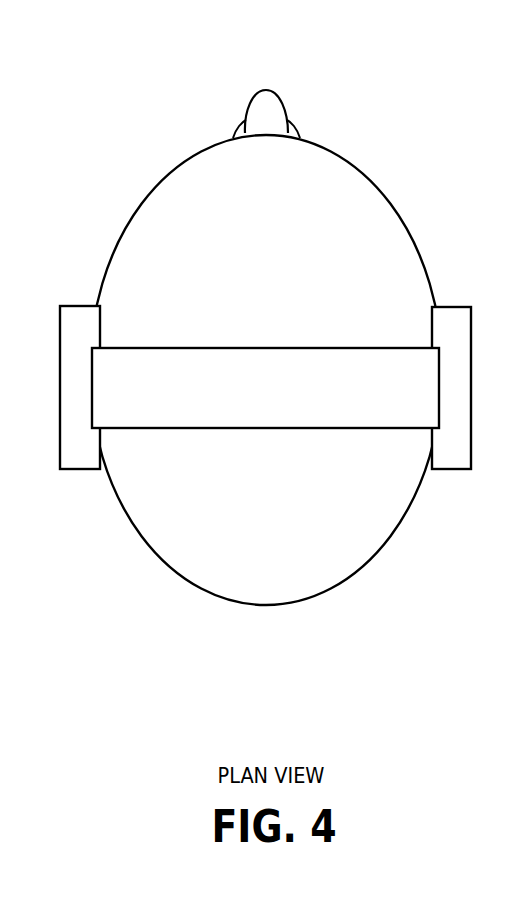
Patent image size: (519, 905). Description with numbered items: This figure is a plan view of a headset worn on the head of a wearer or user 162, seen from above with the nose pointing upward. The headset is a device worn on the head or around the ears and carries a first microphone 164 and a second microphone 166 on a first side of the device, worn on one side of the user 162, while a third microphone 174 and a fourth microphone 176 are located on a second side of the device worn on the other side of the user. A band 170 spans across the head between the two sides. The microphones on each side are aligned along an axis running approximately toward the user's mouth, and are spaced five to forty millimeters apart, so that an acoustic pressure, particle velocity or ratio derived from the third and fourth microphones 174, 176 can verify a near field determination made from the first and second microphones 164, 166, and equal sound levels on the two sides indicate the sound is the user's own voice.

The wearer or user 162 is at (208, 142).
The first microphone 164 is at (64, 336).
The second microphone 166 is at (60, 322).
The head band 170 is at (285, 347).
The third microphone 174 is at (466, 336).
The fourth microphone 176 is at (471, 318).